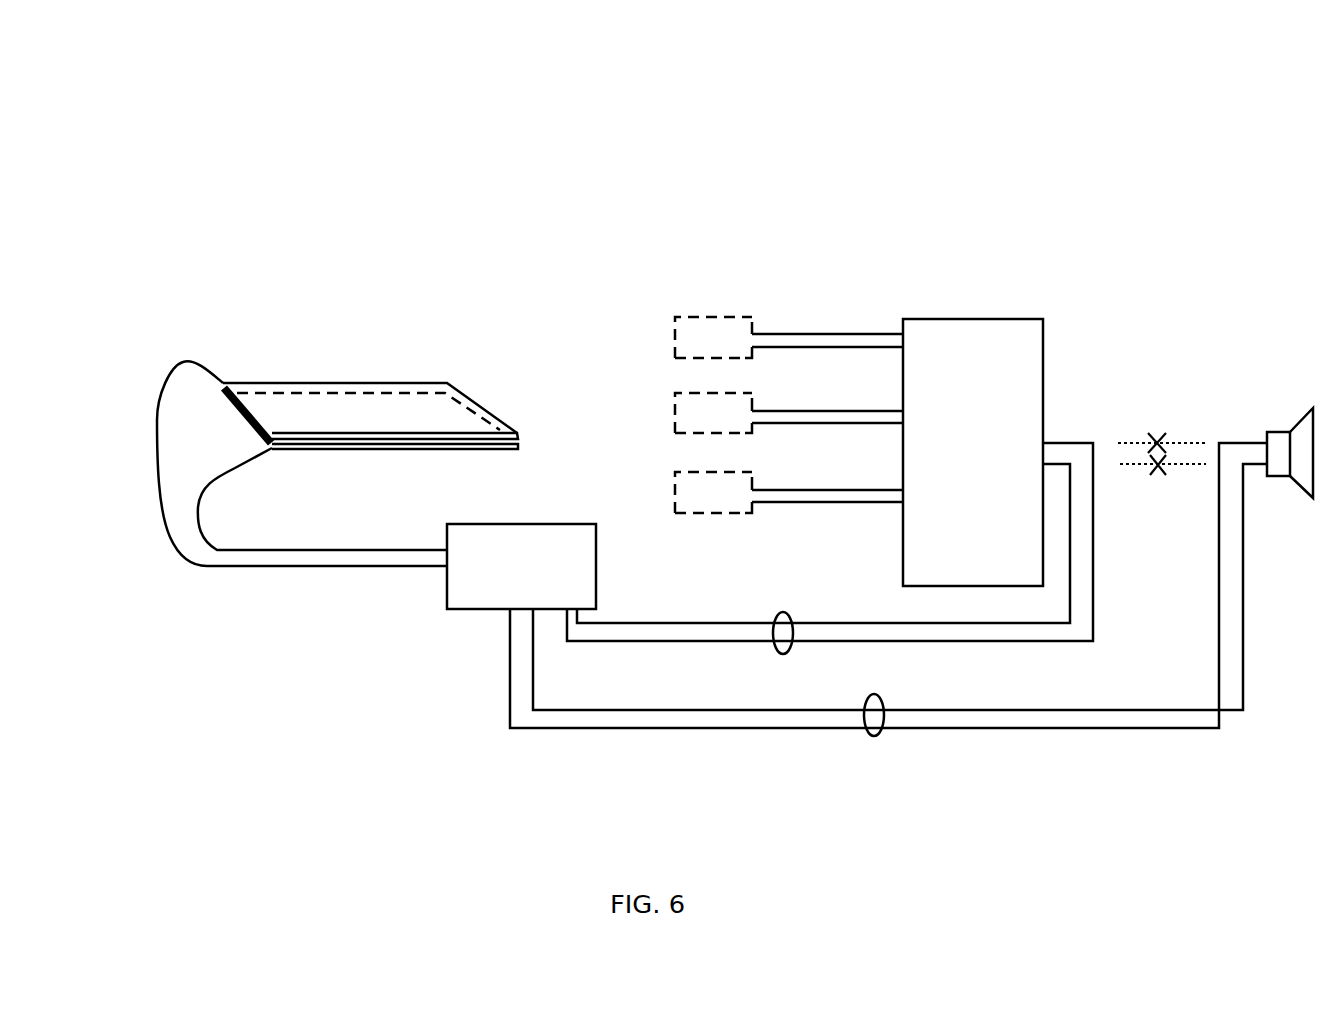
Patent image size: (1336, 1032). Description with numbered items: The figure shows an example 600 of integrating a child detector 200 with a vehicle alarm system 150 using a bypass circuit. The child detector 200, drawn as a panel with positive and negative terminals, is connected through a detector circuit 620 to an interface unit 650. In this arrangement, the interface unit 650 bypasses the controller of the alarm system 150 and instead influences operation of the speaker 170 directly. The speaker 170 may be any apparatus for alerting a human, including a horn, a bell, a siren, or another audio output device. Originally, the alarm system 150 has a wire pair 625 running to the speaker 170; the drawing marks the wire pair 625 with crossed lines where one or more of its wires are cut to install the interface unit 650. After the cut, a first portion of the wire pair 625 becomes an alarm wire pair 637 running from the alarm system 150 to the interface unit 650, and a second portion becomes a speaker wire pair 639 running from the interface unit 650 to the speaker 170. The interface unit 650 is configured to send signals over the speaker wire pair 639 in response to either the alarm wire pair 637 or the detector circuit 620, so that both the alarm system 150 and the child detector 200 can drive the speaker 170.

The example 600 is at (155, 63).
The child detector 200 is at (358, 382).
The detector circuit 620 is at (388, 550).
The interface unit 650 is at (553, 523).
The alarm system 150 is at (987, 319).
The alarm wire pair 637 is at (785, 613).
The speaker wire pair 639 is at (876, 738).
The wire pair 625 is at (1170, 407).
The speaker 170 is at (1276, 432).